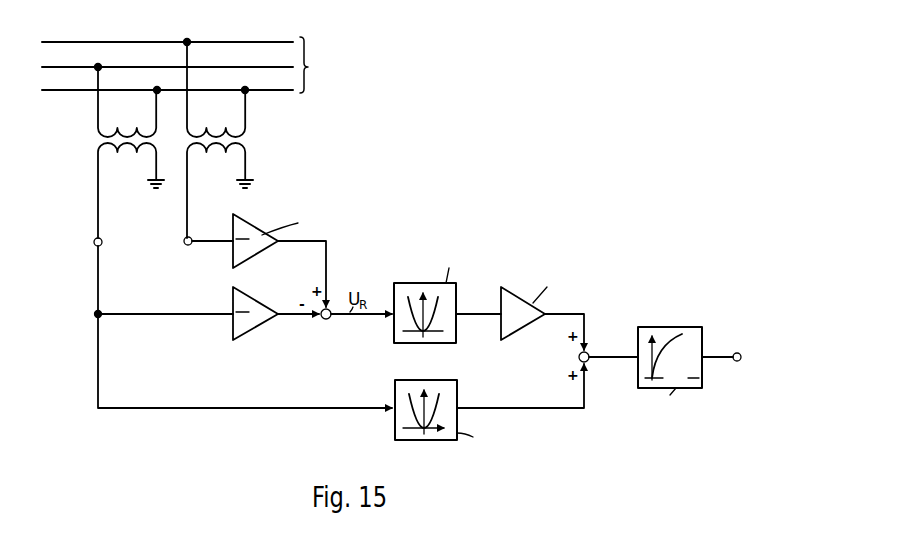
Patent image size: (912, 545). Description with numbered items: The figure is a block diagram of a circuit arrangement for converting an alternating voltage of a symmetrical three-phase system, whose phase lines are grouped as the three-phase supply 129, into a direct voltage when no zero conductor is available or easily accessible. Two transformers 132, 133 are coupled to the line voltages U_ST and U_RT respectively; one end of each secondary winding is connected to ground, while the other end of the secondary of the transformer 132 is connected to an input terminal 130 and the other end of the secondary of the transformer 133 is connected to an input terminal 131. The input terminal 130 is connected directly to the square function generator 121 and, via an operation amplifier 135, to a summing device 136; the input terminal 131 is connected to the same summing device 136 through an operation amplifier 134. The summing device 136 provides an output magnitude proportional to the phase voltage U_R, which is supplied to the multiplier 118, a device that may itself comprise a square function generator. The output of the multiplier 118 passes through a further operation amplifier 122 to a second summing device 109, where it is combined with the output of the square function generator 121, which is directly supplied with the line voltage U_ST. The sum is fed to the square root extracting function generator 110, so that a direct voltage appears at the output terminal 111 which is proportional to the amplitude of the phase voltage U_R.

The three-phase supply lines R, S, T 129 is at (182, 66).
The transformer 132 is at (105, 143).
The transformer 133 is at (233, 140).
The input terminal 130 is at (102, 242).
The input terminal 131 is at (190, 246).
The operation amplifier 134 is at (304, 234).
The operation amplifier 135 is at (258, 335).
The summing device 136 is at (328, 319).
The multiplier 118 is at (424, 283).
The operation amplifier (gain 3) 122 is at (529, 295).
The summing point 109 is at (589, 353).
The square root extracting function generator 110 is at (668, 327).
The output terminal 111 is at (735, 350).
The square function generator 121 is at (425, 440).